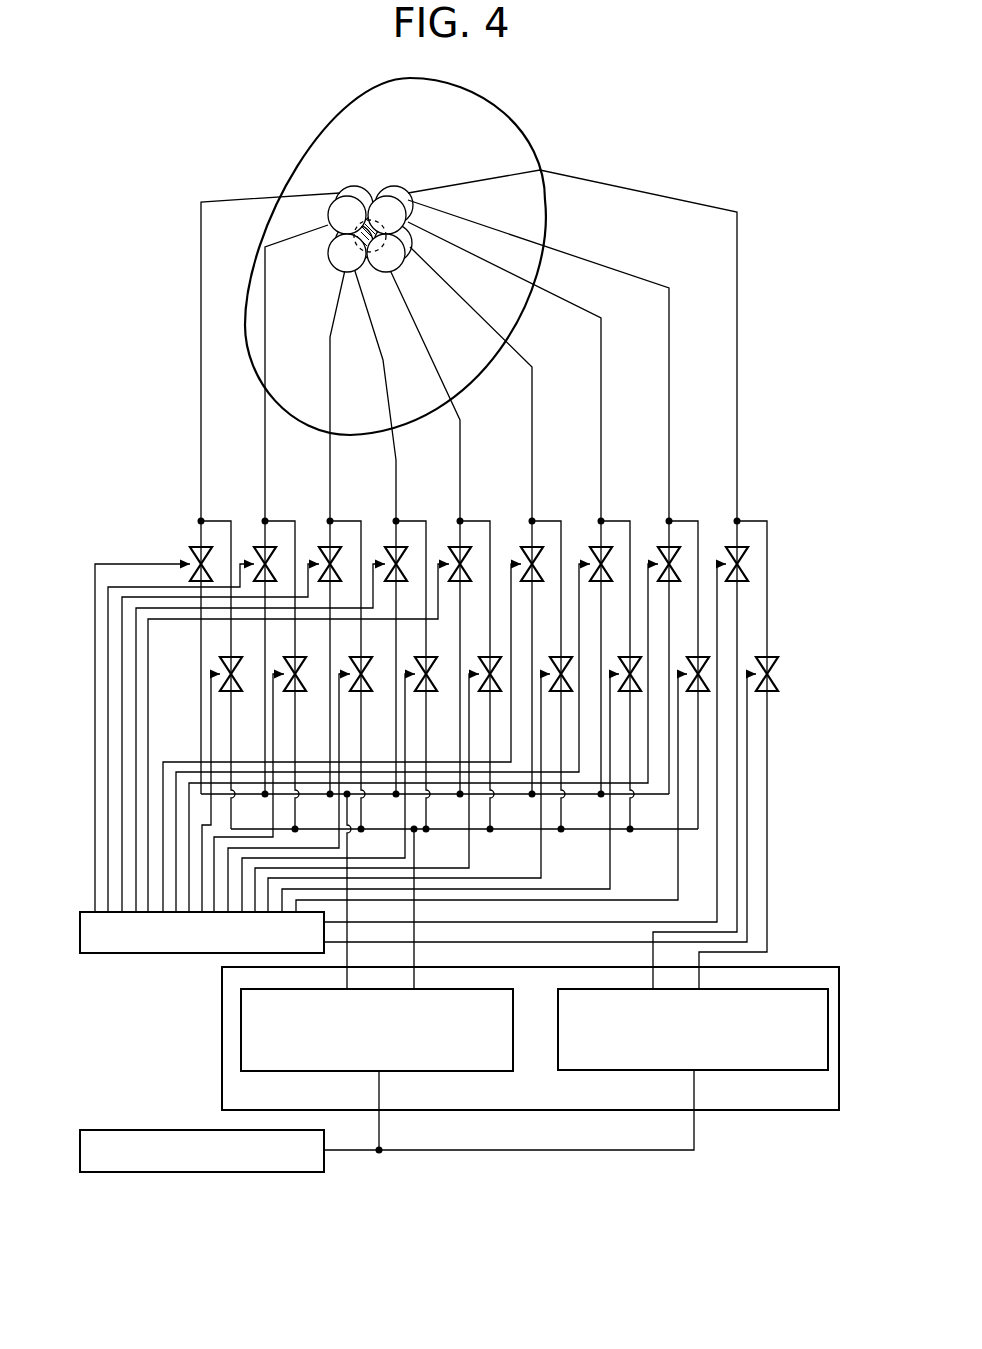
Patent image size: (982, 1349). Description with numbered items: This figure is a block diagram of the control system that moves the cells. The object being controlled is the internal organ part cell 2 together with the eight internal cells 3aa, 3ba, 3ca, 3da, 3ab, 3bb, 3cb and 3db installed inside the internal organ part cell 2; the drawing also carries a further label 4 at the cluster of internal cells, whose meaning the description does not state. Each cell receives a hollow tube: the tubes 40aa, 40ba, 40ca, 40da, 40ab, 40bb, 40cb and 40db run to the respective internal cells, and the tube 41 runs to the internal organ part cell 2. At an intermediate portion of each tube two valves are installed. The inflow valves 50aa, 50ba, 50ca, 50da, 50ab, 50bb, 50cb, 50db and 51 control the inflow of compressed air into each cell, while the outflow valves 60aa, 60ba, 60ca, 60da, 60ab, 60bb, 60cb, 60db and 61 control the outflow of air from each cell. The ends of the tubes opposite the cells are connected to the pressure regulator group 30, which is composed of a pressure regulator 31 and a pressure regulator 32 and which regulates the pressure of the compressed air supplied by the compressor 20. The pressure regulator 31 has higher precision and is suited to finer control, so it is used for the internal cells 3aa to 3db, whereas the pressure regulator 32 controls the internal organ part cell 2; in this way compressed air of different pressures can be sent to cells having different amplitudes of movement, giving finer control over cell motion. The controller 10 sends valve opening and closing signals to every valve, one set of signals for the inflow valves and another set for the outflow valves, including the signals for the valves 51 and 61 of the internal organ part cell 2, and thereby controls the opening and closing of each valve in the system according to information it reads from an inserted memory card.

The internal organ part cell 2 is at (524, 122).
The internal cell 3da is at (332, 212).
The internal cell 3db is at (358, 190).
The internal cell 3aa is at (397, 208).
The internal cell 3ab is at (400, 189).
The internal cell 3ba is at (388, 272).
The internal cell 3bb is at (410, 248).
The internal cell 3ca is at (337, 268).
The internal cell 3cb is at (331, 268).
The actuator 4 is at (407, 224).
The controller 10 is at (140, 955).
The compressor 20 is at (140, 1128).
The pressure regulator group 30 is at (802, 967).
The pressure regulator 31 is at (513, 1003).
The pressure regulator 32 is at (558, 1052).
The tube 40da is at (265, 424).
The tube 40db is at (201, 388).
The tube 40ca is at (396, 443).
The tube 40cb is at (330, 443).
The tube 40ba is at (460, 443).
The tube 40bb is at (532, 388).
The tube 40aa is at (601, 388).
The tube 40ab is at (669, 388).
The tube 41 is at (739, 370).
The valve 50da is at (272, 544).
The valve 50db is at (208, 544).
The valve 50ca is at (403, 544).
The valve 50cb is at (337, 544).
The valve 50ba is at (467, 544).
The valve 50bb is at (539, 544).
The valve 50aa is at (608, 544).
The valve 50ab is at (676, 544).
The valve 51 is at (742, 544).
The valve 60da is at (301, 692).
The valve 60db is at (237, 692).
The valve 60ca is at (432, 692).
The valve 60cb is at (367, 692).
The valve 60ba is at (496, 692).
The valve 60bb is at (556, 692).
The valve 60aa is at (633, 692).
The valve 60ab is at (700, 692).
The valve 61 is at (773, 652).